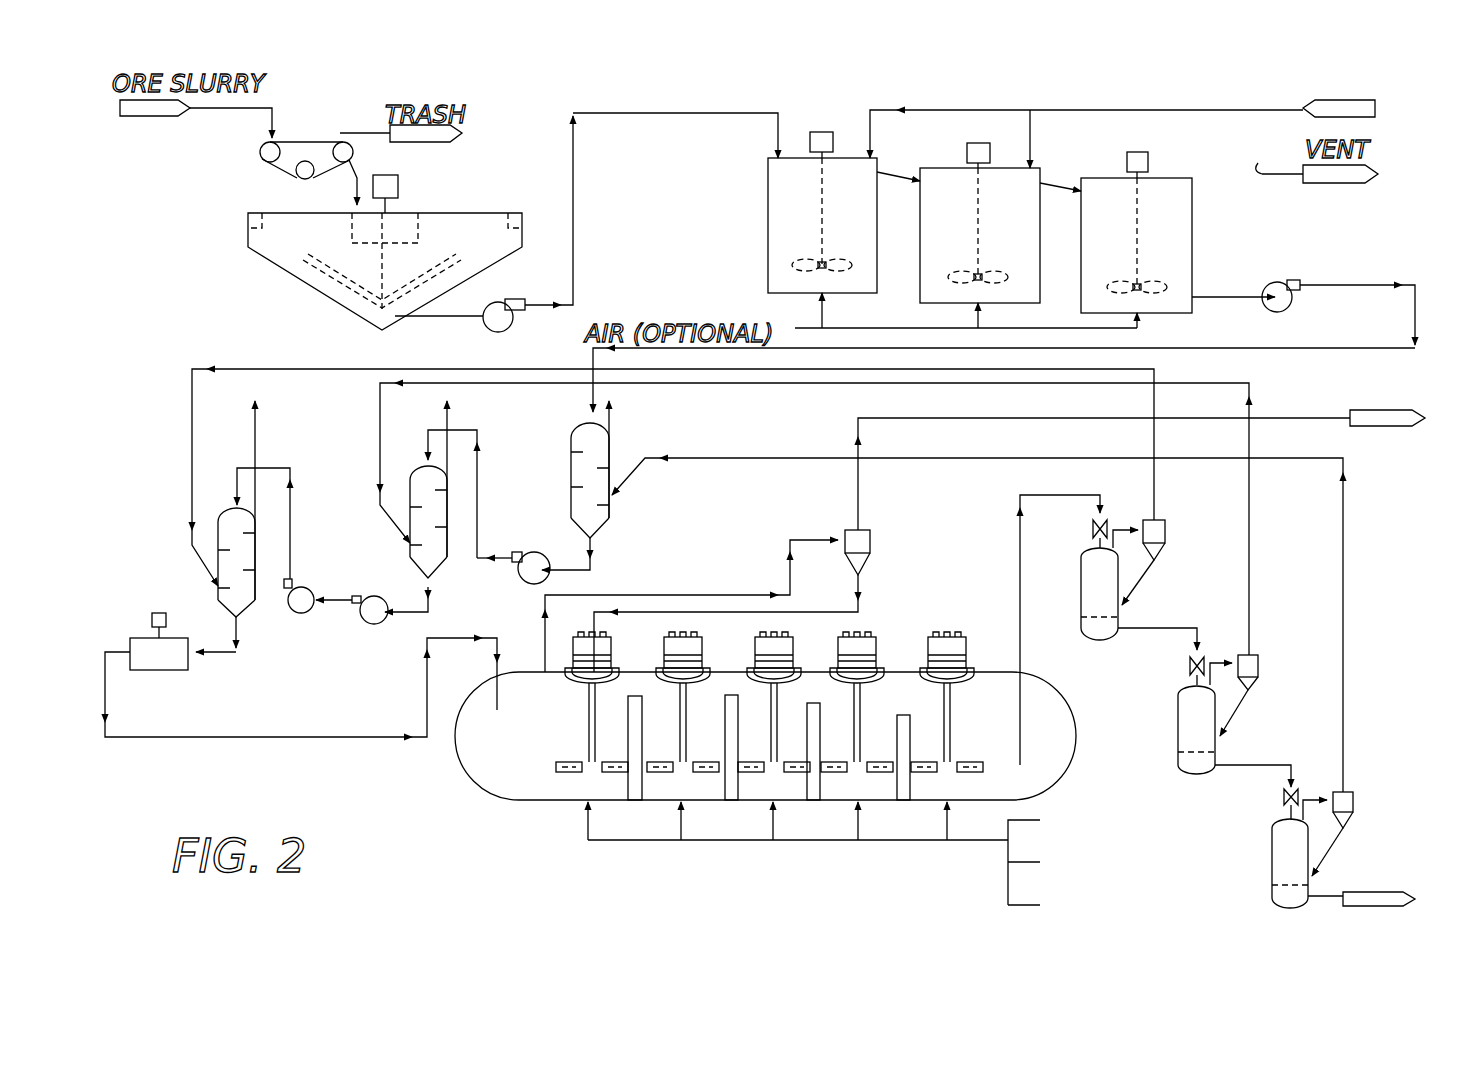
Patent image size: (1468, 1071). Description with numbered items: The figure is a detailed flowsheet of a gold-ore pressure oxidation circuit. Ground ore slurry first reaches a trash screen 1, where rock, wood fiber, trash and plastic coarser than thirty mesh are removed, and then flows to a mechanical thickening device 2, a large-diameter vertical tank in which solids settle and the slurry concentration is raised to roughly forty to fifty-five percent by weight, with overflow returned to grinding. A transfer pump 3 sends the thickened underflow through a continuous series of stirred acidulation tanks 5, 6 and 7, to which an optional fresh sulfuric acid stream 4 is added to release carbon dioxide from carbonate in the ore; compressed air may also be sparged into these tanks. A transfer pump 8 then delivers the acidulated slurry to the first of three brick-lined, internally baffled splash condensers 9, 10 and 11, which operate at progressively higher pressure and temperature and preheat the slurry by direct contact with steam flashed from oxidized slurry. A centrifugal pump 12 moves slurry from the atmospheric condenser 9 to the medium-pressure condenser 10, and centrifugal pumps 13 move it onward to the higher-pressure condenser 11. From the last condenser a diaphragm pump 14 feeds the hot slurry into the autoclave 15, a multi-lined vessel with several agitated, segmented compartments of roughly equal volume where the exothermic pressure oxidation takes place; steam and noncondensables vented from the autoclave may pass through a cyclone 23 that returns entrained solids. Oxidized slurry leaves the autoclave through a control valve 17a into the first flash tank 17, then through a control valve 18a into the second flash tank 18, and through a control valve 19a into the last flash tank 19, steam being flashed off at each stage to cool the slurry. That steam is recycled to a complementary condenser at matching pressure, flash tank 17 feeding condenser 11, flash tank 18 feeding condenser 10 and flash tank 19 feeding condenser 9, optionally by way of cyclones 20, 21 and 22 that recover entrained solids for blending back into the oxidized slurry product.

The trash screen 1 is at (280, 170).
The mechanical thickening device 2 is at (300, 280).
The transfer pump 3 is at (510, 298).
The fresh sulfuric acid stream 4 is at (1222, 110).
The stirred acidulation tank 5 is at (768, 197).
The stirred acidulation tank 6 is at (945, 168).
The stirred acidulation tank 7 is at (1192, 238).
The transfer pump 8 is at (1283, 283).
The splash condenser 9 is at (571, 432).
The splash condenser 10 is at (425, 465).
The splash condenser 11 is at (228, 508).
The centrifugal pump 12 is at (528, 585).
The centrifugal pumps 13 is at (370, 624).
The diaphragm pump 14 is at (158, 670).
The autoclave 15 is at (468, 768).
The first flash tank 17 is at (1081, 572).
The control valve 17a is at (1094, 530).
The second flash tank 18 is at (1178, 718).
The control valve 18a is at (1190, 666).
The last flash tank 19 is at (1272, 845).
The control valve 19a is at (1284, 797).
The cyclone 20 is at (1165, 532).
The cyclone 21 is at (1277, 680).
The cyclone 22 is at (1355, 802).
The cyclone 23 is at (870, 537).